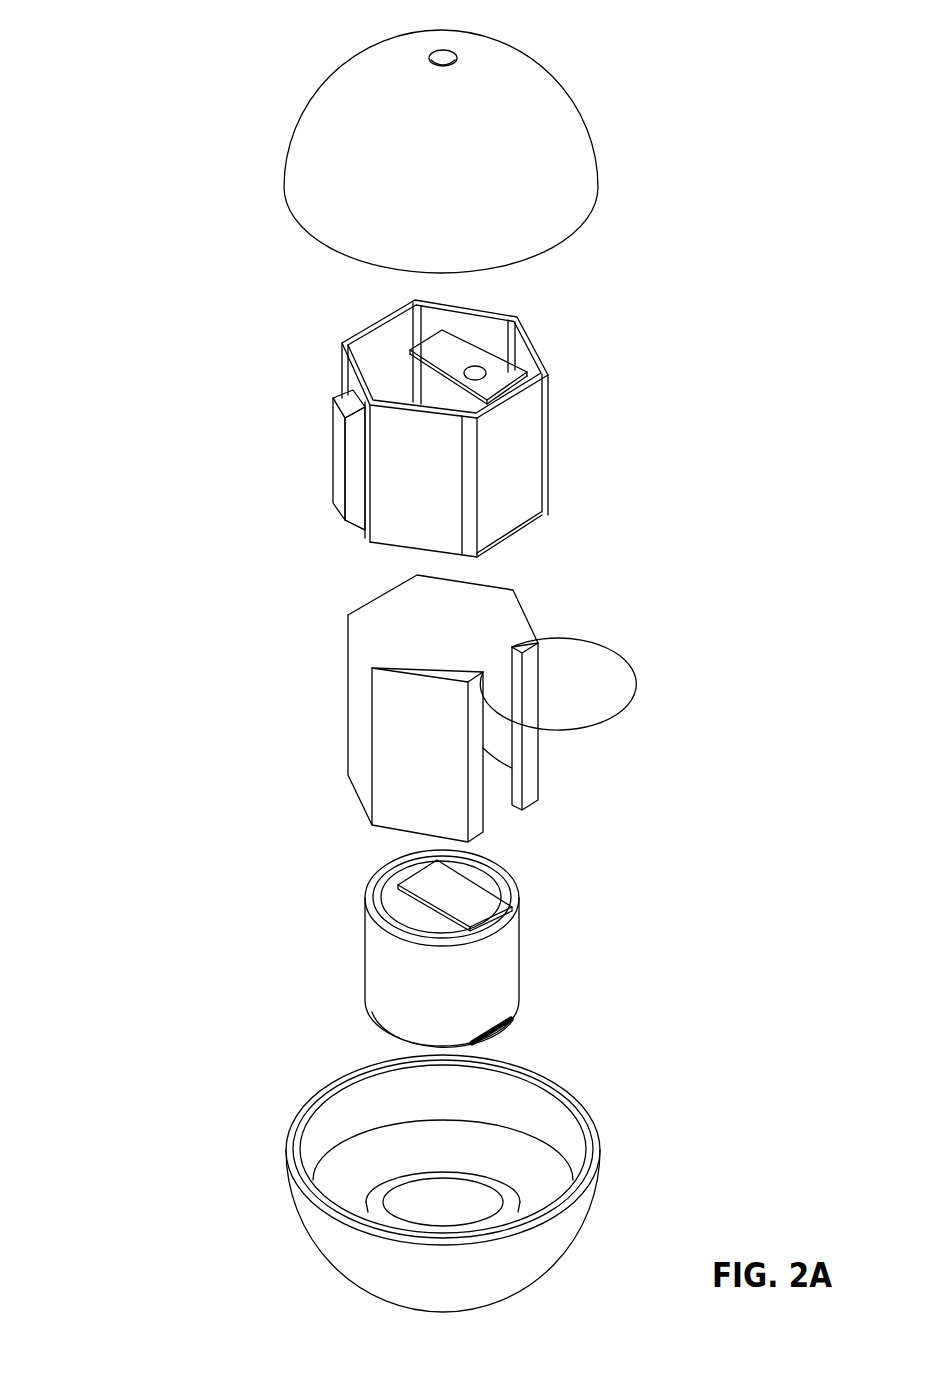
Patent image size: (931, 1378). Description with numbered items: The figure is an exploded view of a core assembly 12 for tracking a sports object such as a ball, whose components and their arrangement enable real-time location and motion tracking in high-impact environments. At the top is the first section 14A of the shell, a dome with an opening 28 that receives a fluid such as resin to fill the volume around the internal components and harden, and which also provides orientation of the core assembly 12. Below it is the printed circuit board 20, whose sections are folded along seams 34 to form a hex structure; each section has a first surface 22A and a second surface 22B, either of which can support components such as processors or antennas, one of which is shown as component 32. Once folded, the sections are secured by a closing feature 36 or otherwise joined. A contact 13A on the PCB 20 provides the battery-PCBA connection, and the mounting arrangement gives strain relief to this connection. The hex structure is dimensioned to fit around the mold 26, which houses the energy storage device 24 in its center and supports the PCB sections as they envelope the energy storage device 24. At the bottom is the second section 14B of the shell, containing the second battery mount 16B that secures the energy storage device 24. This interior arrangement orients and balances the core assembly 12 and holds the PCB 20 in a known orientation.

The core assembly 12 is at (93, 60).
The first section of shell 14A is at (320, 86).
The opening 28 is at (452, 42).
The printed circuit board 20 is at (576, 335).
The contact 13A is at (452, 342).
The first surface 22A is at (500, 486).
The second surface 22B is at (383, 448).
The component 32 is at (333, 466).
The seam 34 is at (341, 345).
The closing feature 36 is at (350, 548).
The mold 26 is at (348, 689).
The energy storage device 24 is at (442, 948).
The second section of shell 14B is at (330, 1267).
The second battery mount 16B is at (437, 1172).